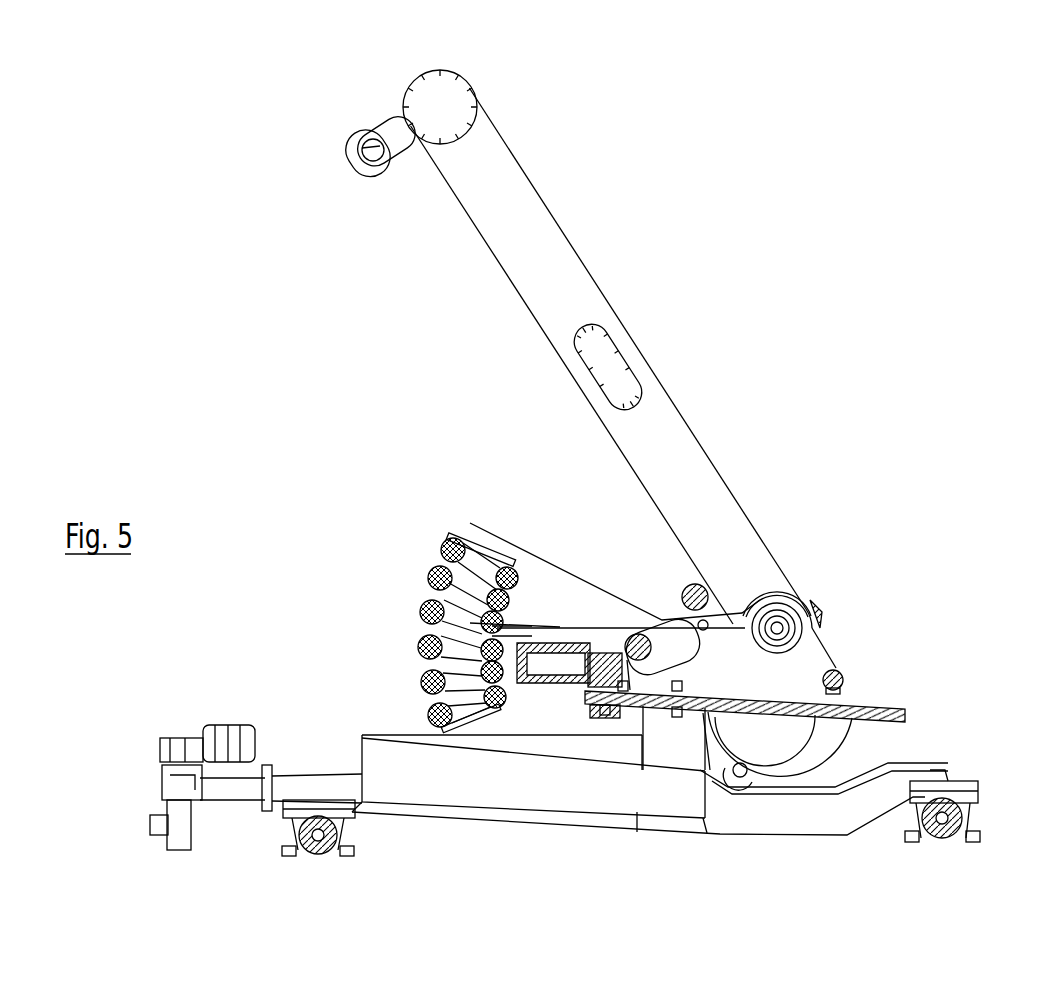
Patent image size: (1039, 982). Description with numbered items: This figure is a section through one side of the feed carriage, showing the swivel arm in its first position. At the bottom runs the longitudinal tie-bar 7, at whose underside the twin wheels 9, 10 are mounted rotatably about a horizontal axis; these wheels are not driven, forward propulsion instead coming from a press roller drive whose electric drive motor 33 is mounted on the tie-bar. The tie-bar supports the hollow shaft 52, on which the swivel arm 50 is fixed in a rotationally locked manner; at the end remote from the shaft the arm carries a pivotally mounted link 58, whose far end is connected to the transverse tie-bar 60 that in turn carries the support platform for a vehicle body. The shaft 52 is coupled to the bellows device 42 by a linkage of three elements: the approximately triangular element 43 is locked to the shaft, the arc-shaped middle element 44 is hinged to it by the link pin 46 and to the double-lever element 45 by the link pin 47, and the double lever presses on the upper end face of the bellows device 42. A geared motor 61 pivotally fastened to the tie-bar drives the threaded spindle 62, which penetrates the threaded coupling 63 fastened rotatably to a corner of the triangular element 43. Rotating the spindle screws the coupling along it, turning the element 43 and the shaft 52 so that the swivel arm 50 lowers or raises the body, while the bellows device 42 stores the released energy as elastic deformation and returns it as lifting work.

The longitudinal tie-bar 7 is at (794, 803).
The twin wheel 9 is at (310, 798).
The twin wheel 10 is at (950, 780).
The electric drive motor 33 is at (218, 728).
The bellows device 42 is at (432, 578).
The triangular element 43 is at (818, 655).
The arc-shaped element 44 is at (828, 742).
The double-lever element 45 is at (561, 598).
The link pin 46 is at (812, 740).
The link pin 47 is at (748, 780).
The swivel arm 50 is at (542, 277).
The shaft 52 is at (785, 607).
The link 58 is at (397, 135).
The transverse tie-bar 60 is at (375, 147).
The geared motor 61 is at (566, 690).
The threaded spindle 62 is at (884, 710).
The threaded coupling 63 is at (640, 614).